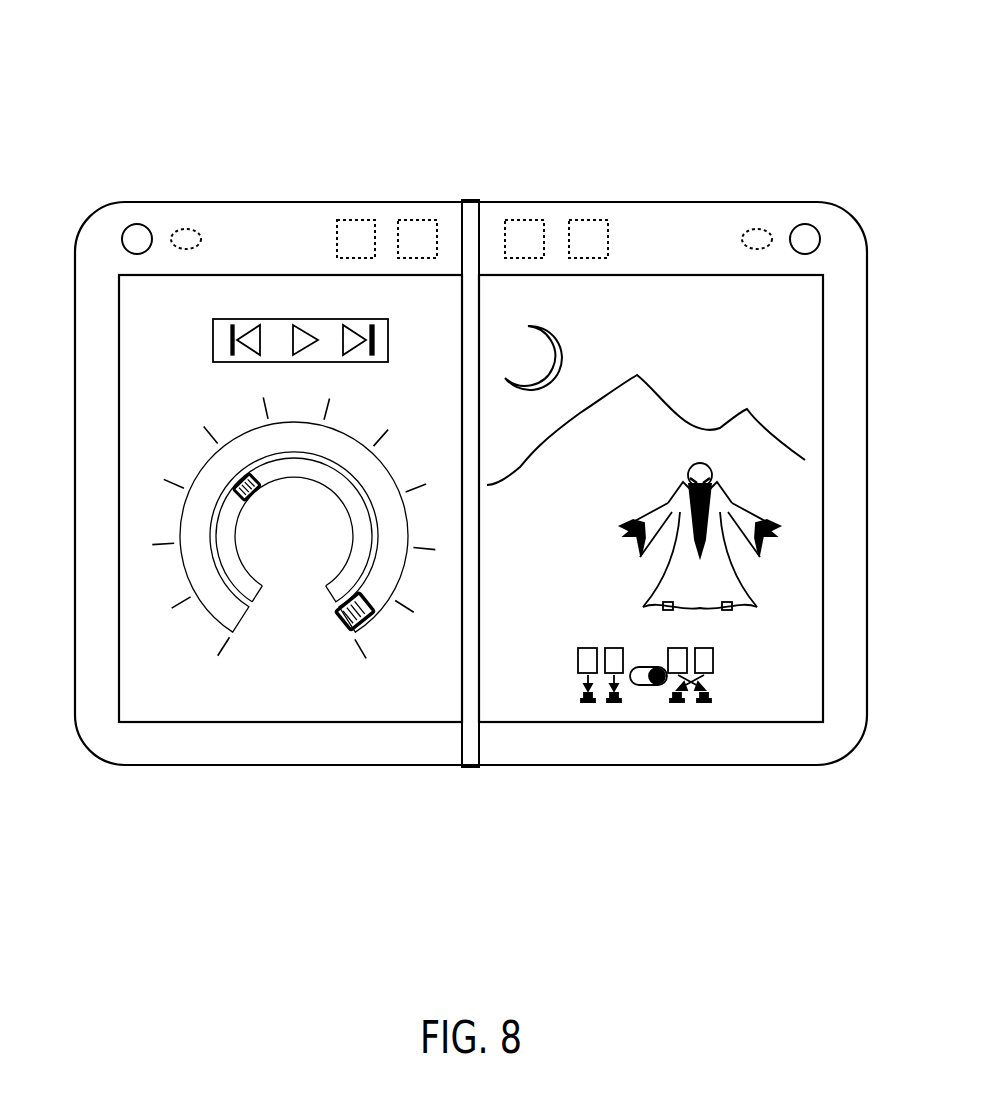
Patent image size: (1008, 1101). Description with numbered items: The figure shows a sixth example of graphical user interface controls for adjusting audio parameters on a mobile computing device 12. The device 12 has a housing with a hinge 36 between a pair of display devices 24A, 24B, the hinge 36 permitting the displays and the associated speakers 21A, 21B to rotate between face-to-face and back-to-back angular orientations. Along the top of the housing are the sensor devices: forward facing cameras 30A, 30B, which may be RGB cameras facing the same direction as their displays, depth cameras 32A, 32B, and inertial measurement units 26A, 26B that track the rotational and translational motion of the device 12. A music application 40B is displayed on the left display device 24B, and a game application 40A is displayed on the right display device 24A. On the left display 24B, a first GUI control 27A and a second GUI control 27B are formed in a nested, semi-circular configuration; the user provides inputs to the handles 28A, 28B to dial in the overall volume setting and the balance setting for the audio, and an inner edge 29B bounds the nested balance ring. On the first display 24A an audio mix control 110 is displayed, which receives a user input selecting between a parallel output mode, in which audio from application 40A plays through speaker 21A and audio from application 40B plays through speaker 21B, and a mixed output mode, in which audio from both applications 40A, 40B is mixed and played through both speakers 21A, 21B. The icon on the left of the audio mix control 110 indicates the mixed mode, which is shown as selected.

The mobile computing device 12 is at (357, 47).
The hinge 36 is at (470, 200).
The first display device 24A is at (651, 498).
The second display device 24B is at (290, 498).
The forward facing camera 30A is at (803, 224).
The forward facing camera 30B is at (138, 224).
The depth camera 32A is at (757, 229).
The depth camera 32B is at (183, 229).
The first speaker 21A is at (590, 220).
The second speaker 21B is at (358, 220).
The inertial measurement unit 26A is at (525, 220).
The inertial measurement unit 26B is at (418, 220).
The game application 40A is at (520, 700).
The music application 40B is at (420, 700).
The first GUI control 27A is at (246, 412).
The second GUI control 27B is at (338, 520).
The handle 28A is at (373, 627).
The handle 28B is at (253, 498).
The inner edge of balance control 29B is at (280, 480).
The audio mix control 110 is at (723, 690).